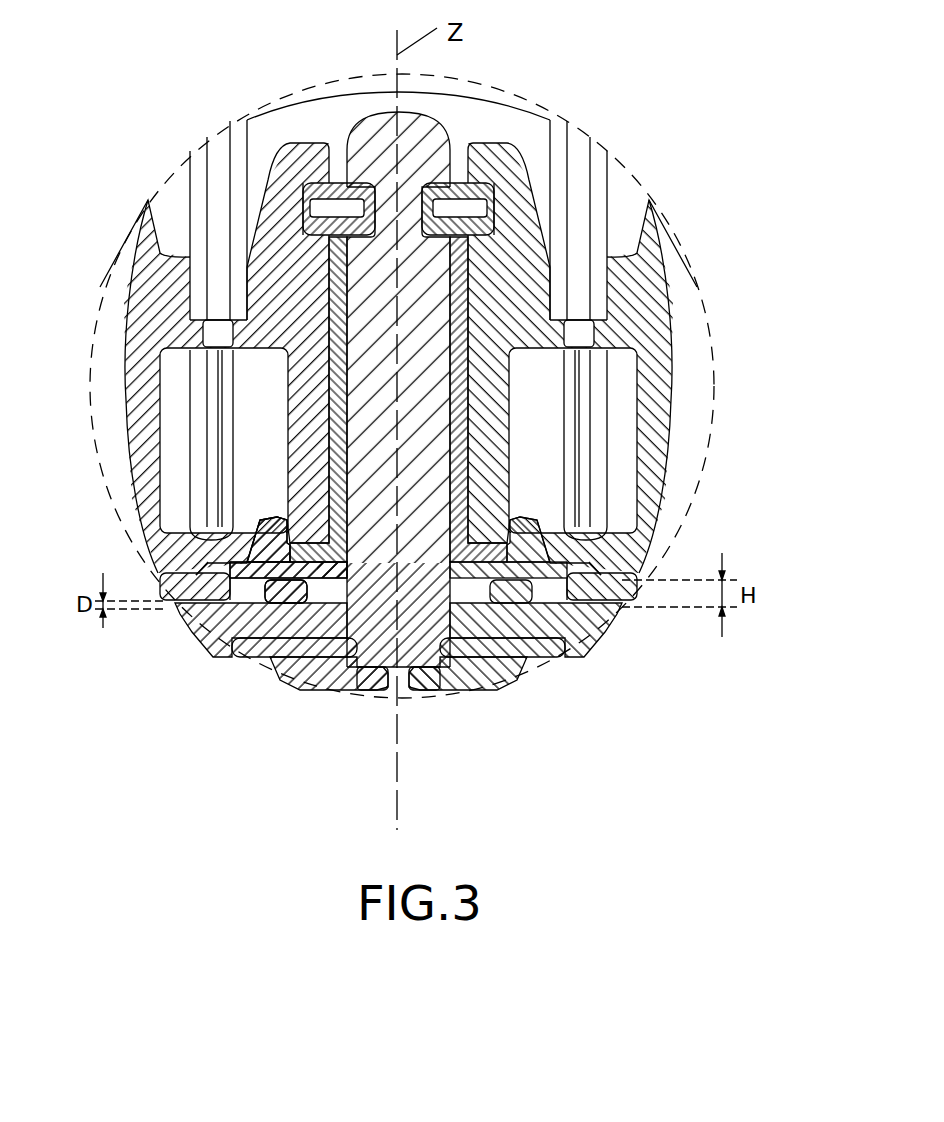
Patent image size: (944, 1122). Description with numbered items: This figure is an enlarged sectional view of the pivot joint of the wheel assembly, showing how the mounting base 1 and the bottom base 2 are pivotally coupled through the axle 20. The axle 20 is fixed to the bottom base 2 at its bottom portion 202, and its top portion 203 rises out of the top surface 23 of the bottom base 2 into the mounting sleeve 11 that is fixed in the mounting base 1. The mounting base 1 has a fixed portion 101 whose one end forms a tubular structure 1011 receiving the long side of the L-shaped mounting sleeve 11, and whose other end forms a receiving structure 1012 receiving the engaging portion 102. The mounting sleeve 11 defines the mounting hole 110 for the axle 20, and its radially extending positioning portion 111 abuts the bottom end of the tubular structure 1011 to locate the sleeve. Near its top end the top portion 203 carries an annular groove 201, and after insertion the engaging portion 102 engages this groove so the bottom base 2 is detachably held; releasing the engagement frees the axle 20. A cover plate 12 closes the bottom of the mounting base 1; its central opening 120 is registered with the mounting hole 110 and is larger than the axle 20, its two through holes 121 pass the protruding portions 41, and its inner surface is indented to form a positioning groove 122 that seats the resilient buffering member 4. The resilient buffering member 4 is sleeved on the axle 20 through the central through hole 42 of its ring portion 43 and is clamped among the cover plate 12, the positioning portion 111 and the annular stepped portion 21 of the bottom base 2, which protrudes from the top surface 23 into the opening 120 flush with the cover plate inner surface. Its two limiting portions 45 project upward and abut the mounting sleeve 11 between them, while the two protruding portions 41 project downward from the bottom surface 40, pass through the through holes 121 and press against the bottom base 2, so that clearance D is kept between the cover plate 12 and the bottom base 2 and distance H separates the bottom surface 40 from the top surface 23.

The mounting base 1 is at (137, 247).
The tubular structure 1011 is at (303, 447).
The receiving structure 1012 is at (282, 212).
The fixed portion 101 is at (288, 392).
The mounting sleeve 11 is at (462, 450).
The axle 20 is at (370, 150).
The bottom portion 202 is at (413, 627).
The annular groove 201 is at (365, 213).
The engaging portion 102 is at (470, 193).
The positioning portion 111 is at (300, 555).
The top portion 203 is at (438, 278).
The resilient buffering member 4 is at (215, 568).
The protruding portions 41 is at (247, 607).
The mounting hole 110 is at (343, 567).
The ring portion 43 is at (303, 578).
The bottom surface 40 is at (548, 598).
The limiting portions 45 is at (260, 535).
The positioning groove 122 is at (198, 578).
The cover plate 12 is at (638, 570).
The through holes 121 is at (222, 603).
The top surface 23 is at (280, 603).
The annular stepped portion 21 is at (470, 594).
The central opening 120 is at (308, 612).
The central through hole 42 is at (459, 594).
The bottom base 2 is at (367, 682).